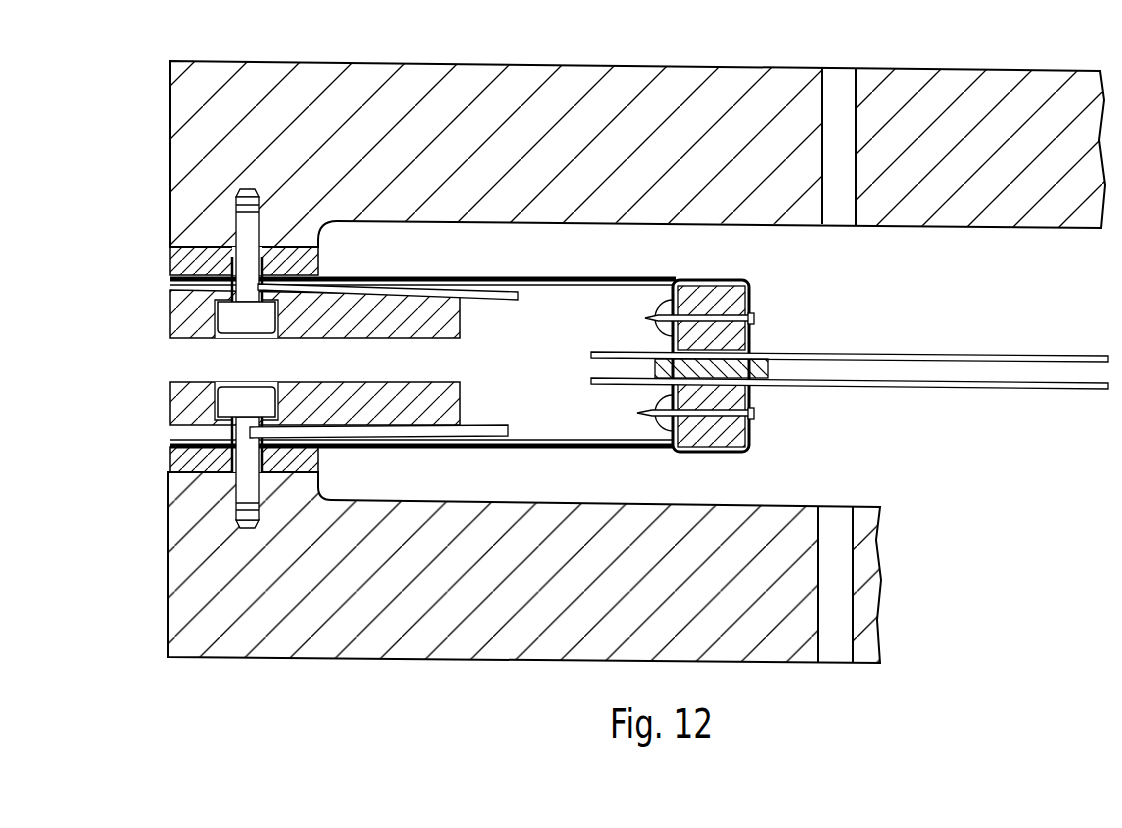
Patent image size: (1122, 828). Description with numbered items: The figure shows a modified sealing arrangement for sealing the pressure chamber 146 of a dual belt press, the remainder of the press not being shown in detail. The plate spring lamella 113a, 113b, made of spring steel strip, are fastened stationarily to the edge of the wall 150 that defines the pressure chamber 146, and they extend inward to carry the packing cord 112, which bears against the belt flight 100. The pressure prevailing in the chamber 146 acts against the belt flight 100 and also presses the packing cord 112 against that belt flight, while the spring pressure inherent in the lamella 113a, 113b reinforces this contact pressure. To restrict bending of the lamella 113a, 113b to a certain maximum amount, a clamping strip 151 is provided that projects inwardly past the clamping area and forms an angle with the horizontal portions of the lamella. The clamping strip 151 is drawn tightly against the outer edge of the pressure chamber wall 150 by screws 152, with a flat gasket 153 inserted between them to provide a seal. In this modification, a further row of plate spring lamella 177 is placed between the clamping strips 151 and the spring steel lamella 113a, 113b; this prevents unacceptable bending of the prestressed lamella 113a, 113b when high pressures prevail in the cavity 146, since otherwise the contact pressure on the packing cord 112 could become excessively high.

The pressure chamber wall 150 is at (457, 100).
The flat gasket 153 is at (203, 262).
The screw 152 is at (233, 317).
The clamping strip 151 is at (410, 320).
The plate spring lamella 177 is at (496, 296).
The plate spring lamella 113a is at (603, 273).
The plate spring lamella 113b is at (602, 288).
The packing cord 112 is at (750, 290).
The belt flight 100 is at (865, 357).
The pressure chamber 146 is at (1023, 285).